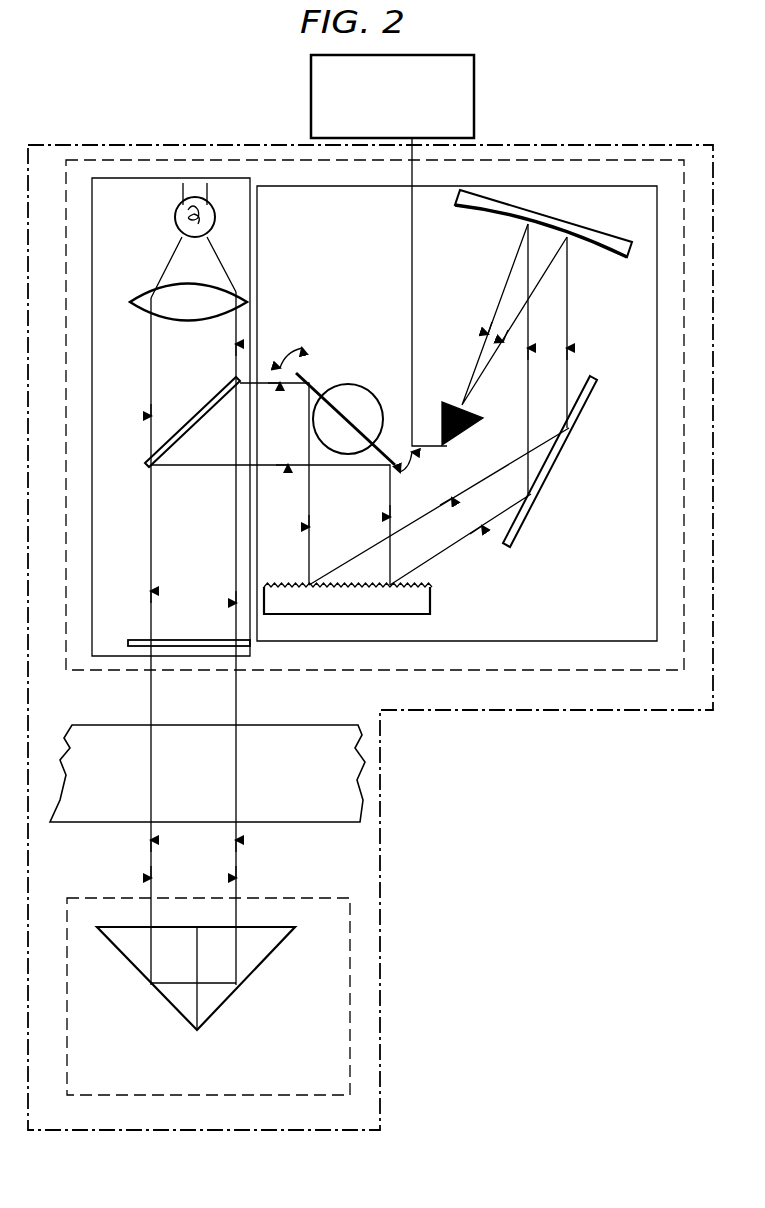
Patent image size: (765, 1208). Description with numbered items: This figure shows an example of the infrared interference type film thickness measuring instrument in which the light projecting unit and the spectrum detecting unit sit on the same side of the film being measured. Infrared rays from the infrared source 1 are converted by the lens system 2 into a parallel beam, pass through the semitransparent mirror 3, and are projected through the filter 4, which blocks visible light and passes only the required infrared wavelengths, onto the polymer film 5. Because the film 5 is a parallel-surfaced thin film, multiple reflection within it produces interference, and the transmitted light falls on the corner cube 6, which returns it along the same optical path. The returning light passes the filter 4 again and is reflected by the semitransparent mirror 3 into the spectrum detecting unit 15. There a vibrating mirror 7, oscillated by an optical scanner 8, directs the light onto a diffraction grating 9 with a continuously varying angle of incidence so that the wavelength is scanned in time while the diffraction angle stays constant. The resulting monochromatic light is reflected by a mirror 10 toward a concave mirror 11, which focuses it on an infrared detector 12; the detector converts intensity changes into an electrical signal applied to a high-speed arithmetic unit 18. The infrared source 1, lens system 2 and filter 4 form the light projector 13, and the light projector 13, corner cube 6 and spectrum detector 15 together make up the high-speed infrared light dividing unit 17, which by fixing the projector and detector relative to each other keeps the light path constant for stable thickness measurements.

The infrared source 1 is at (176, 220).
The lens system 2 is at (142, 300).
The semitransparent mirror 3 is at (145, 462).
The filter 4 is at (131, 640).
The polymer film 5 is at (68, 772).
The corner cube 6 is at (140, 972).
The vibrating mirror 7 is at (312, 378).
The optical scanner 8 is at (367, 392).
The diffraction grating 9 is at (432, 598).
The mirror 10 is at (557, 470).
The concave mirror 11 is at (468, 212).
The infrared detector 12 is at (441, 420).
The light projector 13 is at (97, 178).
The spectrum detecting unit 15 is at (517, 188).
The high-speed infrared light spectroscopic scanning unit 17 is at (440, 712).
The high-speed arithmetic unit 18 is at (311, 98).